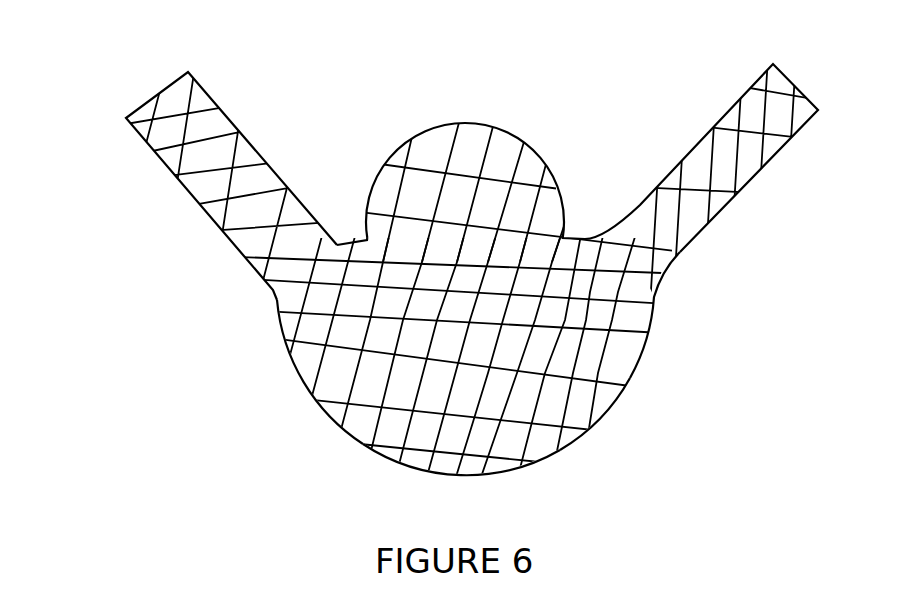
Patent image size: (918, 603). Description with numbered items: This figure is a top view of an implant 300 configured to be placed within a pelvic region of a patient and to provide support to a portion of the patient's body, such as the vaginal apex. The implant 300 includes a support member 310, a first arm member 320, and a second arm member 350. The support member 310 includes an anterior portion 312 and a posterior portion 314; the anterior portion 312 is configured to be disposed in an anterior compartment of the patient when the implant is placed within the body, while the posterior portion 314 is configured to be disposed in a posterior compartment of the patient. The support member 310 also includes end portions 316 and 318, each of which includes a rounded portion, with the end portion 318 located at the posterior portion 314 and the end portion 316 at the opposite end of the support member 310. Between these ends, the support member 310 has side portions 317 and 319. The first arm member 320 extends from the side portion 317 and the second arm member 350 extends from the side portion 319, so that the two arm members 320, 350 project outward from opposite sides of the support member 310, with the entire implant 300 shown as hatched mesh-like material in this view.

The implant 300 is at (110, 36).
The support member 310 is at (593, 373).
The anterior portion 312 is at (573, 420).
The posterior portion 314 is at (505, 167).
The end portion 316 is at (517, 465).
The side portion 317 is at (302, 333).
The end portion 318 is at (467, 122).
The side portion 319 is at (633, 317).
The first arm member 320 is at (218, 205).
The second arm member 350 is at (737, 180).